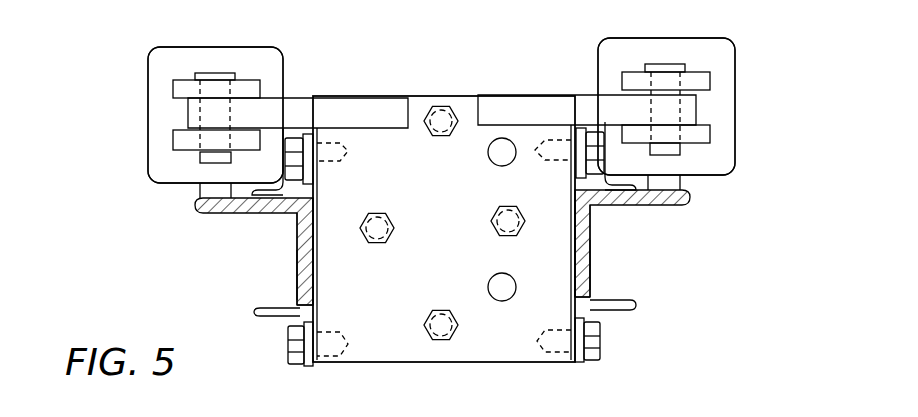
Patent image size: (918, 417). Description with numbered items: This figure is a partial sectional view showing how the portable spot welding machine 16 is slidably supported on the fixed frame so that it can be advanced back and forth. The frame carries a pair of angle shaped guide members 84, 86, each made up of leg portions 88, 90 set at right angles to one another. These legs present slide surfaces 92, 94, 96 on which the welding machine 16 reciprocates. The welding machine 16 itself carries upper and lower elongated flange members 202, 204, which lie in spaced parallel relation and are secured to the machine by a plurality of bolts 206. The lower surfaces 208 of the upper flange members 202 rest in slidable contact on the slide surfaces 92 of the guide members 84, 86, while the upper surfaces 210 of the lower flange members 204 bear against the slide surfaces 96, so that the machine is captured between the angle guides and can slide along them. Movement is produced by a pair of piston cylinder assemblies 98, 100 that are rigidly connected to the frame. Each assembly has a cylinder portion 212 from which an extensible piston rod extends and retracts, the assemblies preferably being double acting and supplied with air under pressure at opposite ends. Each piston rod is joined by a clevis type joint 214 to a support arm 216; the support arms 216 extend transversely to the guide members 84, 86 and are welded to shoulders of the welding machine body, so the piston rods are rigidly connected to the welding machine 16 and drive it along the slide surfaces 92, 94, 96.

The welding machine 16 is at (445, 253).
The guide member 84 is at (590, 213).
The guide member 86 is at (297, 230).
The leg portion 88 is at (196, 208).
The leg portion 90 is at (297, 270).
The slide surface 92 is at (279, 188).
The slide surface 94 is at (316, 260).
The slide surface 96 is at (292, 328).
The piston cylinder assembly 98 is at (740, 56).
The piston cylinder assembly 100 is at (138, 90).
The upper elongated flange member 202 is at (310, 181).
The lower elongated flange member 204 is at (262, 312).
The bolt 206 is at (345, 148).
The lower surface 208 is at (313, 213).
The upper surface 210 is at (315, 296).
The cylinder portion 212 is at (205, 52).
The clevis type joint 214 is at (240, 70).
The support arm 216 is at (330, 108).